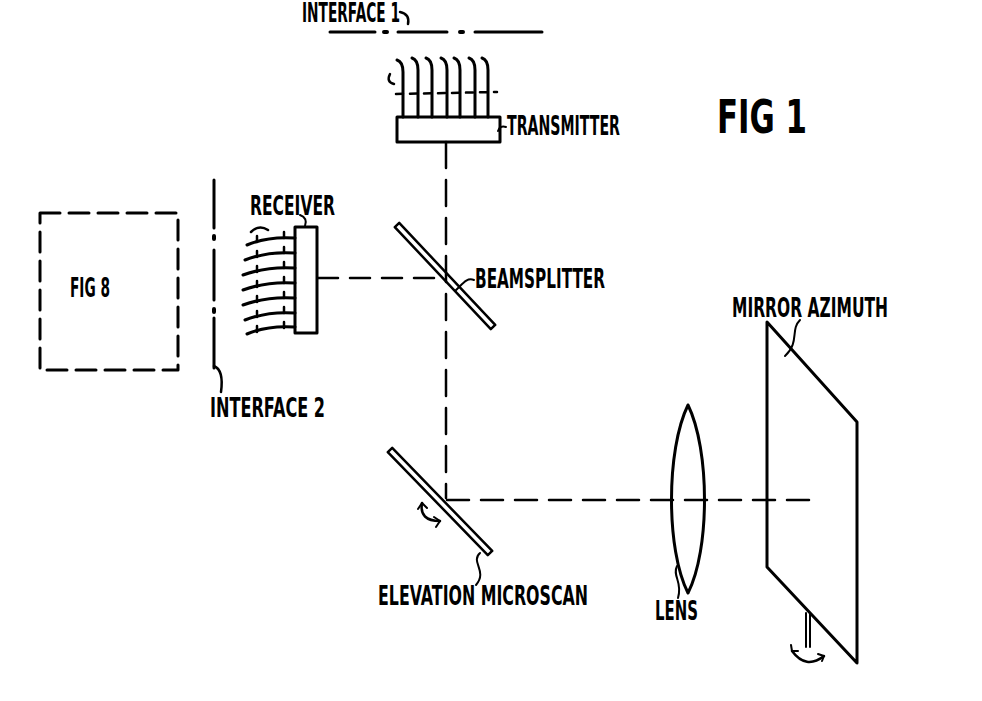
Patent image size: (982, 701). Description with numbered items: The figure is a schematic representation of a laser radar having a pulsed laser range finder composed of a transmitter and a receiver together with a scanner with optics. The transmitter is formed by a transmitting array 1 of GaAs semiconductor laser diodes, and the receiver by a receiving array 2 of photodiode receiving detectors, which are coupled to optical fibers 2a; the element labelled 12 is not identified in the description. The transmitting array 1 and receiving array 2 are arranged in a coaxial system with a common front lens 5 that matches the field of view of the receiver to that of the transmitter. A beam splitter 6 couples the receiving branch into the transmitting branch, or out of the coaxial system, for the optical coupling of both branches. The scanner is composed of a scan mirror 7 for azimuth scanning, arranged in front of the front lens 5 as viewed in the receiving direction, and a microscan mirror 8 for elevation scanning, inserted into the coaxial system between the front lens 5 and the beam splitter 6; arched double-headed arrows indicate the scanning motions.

The transmitting array 1 is at (485, 143).
The transmitter antenna array 12 is at (497, 82).
The receiving array 2 is at (306, 334).
The optical fibers 2a is at (262, 331).
The beam splitter 6 is at (478, 319).
The microscan mirror 8 is at (462, 528).
The front lens 5 is at (685, 446).
The scan mirror 7 is at (781, 569).